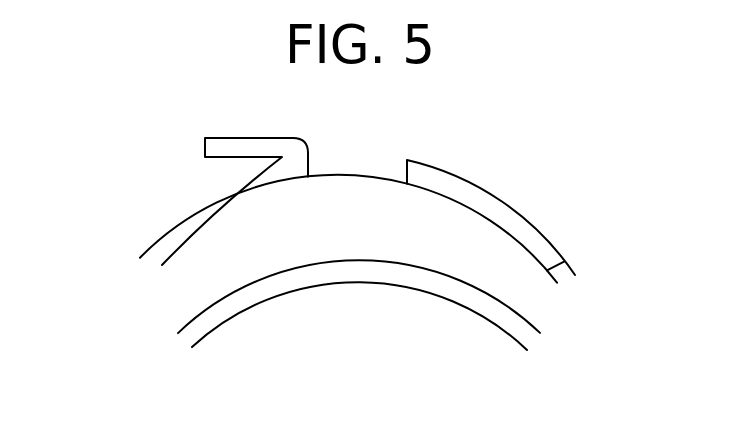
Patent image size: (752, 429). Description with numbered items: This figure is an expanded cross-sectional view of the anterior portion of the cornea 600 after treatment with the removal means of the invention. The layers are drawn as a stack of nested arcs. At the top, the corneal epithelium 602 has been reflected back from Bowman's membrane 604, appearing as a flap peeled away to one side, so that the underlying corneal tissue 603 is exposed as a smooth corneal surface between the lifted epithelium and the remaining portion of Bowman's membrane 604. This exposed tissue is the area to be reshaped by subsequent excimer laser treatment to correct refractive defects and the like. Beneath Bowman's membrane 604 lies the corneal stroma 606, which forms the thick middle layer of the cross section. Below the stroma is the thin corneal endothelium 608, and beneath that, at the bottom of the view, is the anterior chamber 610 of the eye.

The cornea 600 is at (132, 242).
The corneal epithelium 602 is at (268, 139).
The underlying corneal tissue 603 is at (377, 178).
The Bowman's membrane 604 is at (560, 258).
The corneal stroma 606 is at (388, 237).
The corneal endothelium 608 is at (213, 306).
The anterior chamber 610 is at (385, 330).